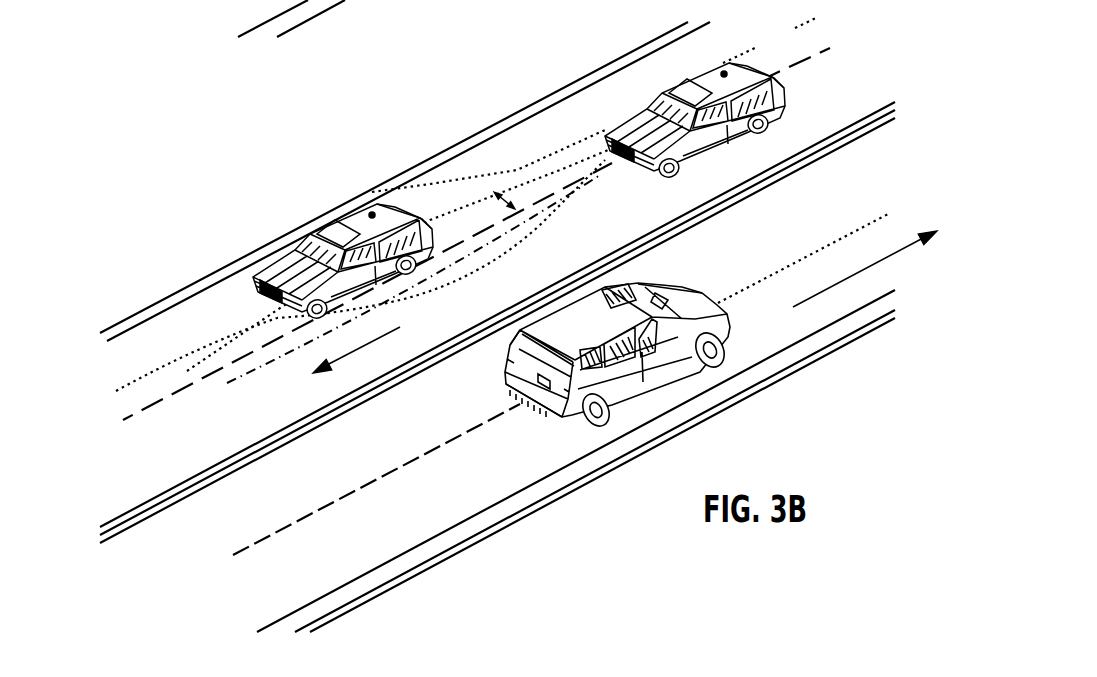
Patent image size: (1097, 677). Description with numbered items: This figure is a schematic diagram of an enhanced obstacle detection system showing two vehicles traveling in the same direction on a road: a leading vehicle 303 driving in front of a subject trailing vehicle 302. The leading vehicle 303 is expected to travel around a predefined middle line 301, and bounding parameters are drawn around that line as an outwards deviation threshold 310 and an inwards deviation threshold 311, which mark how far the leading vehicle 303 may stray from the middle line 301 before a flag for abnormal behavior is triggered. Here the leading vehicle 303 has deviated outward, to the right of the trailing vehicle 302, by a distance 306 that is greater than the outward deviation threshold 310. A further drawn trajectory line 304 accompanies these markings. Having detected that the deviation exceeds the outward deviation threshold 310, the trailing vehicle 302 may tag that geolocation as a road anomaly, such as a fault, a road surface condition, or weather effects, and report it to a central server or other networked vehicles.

The middle line 301 is at (140, 412).
The subject trailing vehicle 302 is at (709, 64).
The leading vehicle 303 is at (350, 208).
The predicted trajectory of vehicle 304 is at (128, 384).
The distance 306 is at (505, 200).
The outwards deviation threshold 310 is at (230, 342).
The inwards deviation threshold 311 is at (225, 387).